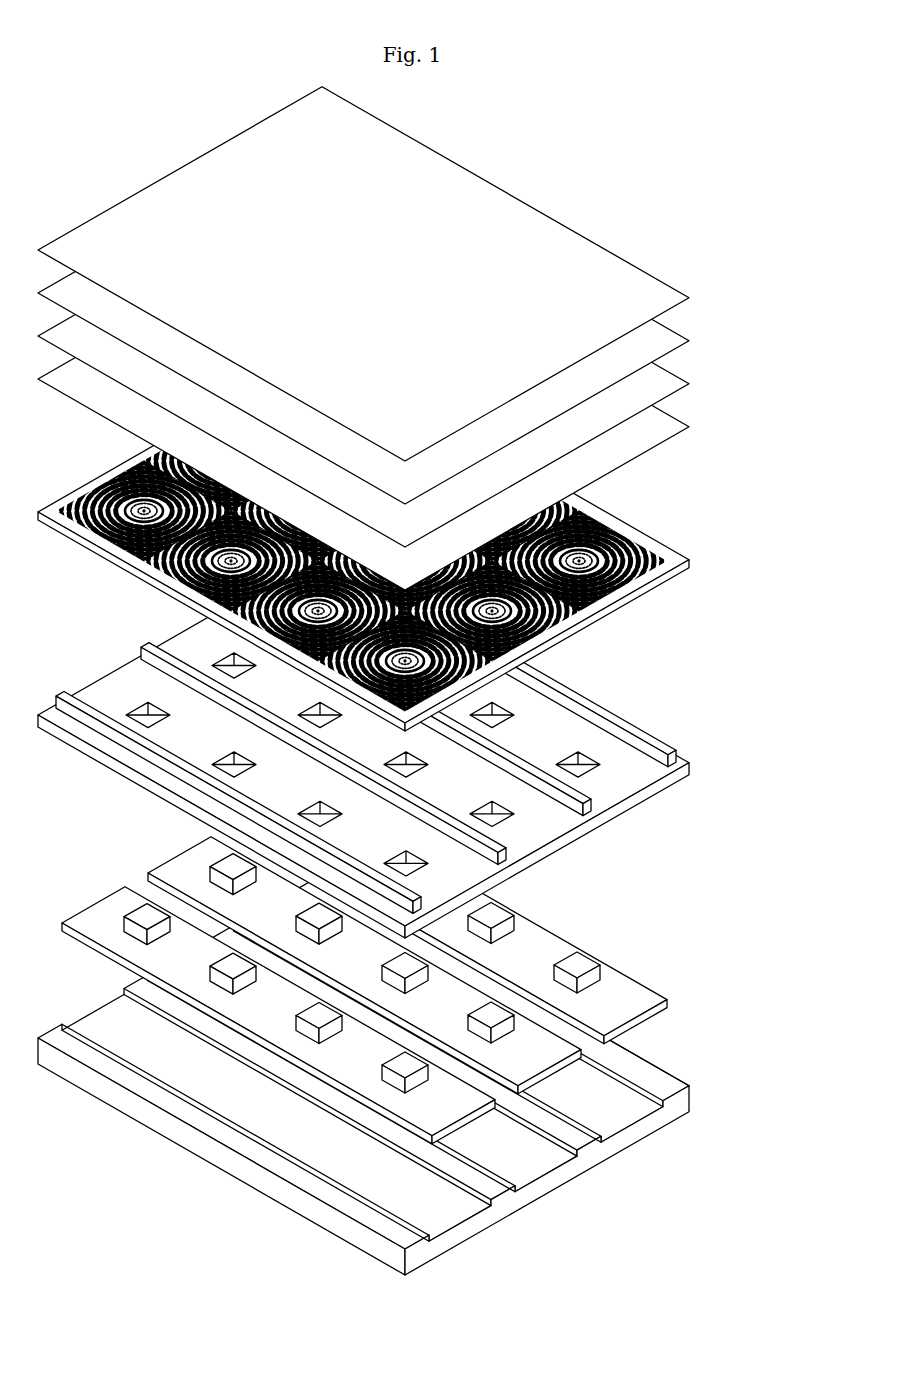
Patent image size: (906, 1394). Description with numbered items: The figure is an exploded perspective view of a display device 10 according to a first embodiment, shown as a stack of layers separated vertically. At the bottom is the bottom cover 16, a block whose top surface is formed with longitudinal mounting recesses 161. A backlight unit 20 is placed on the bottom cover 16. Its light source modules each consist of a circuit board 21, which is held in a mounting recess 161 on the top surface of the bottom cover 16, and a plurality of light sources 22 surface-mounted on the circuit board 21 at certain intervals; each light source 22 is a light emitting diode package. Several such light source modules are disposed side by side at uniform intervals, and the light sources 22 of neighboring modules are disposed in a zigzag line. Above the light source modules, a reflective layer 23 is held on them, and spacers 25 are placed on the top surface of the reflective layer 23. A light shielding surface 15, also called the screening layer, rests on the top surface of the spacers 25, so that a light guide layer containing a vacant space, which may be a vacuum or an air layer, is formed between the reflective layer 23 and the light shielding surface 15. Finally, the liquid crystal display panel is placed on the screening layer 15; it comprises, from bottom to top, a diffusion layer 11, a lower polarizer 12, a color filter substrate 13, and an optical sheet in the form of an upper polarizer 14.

The display device 10 is at (422, 681).
The diffusion layer 11 is at (689, 427).
The lower polarizer 12 is at (689, 384).
The color filter substrate 13 is at (689, 341).
The upper polarizer 14 is at (689, 298).
The light shielding surface 15 is at (689, 564).
The bottom cover 16 is at (689, 1099).
The mounting recess 161 is at (446, 1216).
The backlight unit 20 is at (422, 844).
The circuit board 21 is at (667, 1001).
The light source 22 is at (580, 968).
The reflective layer 23 is at (689, 768).
The spacer 25 is at (409, 729).